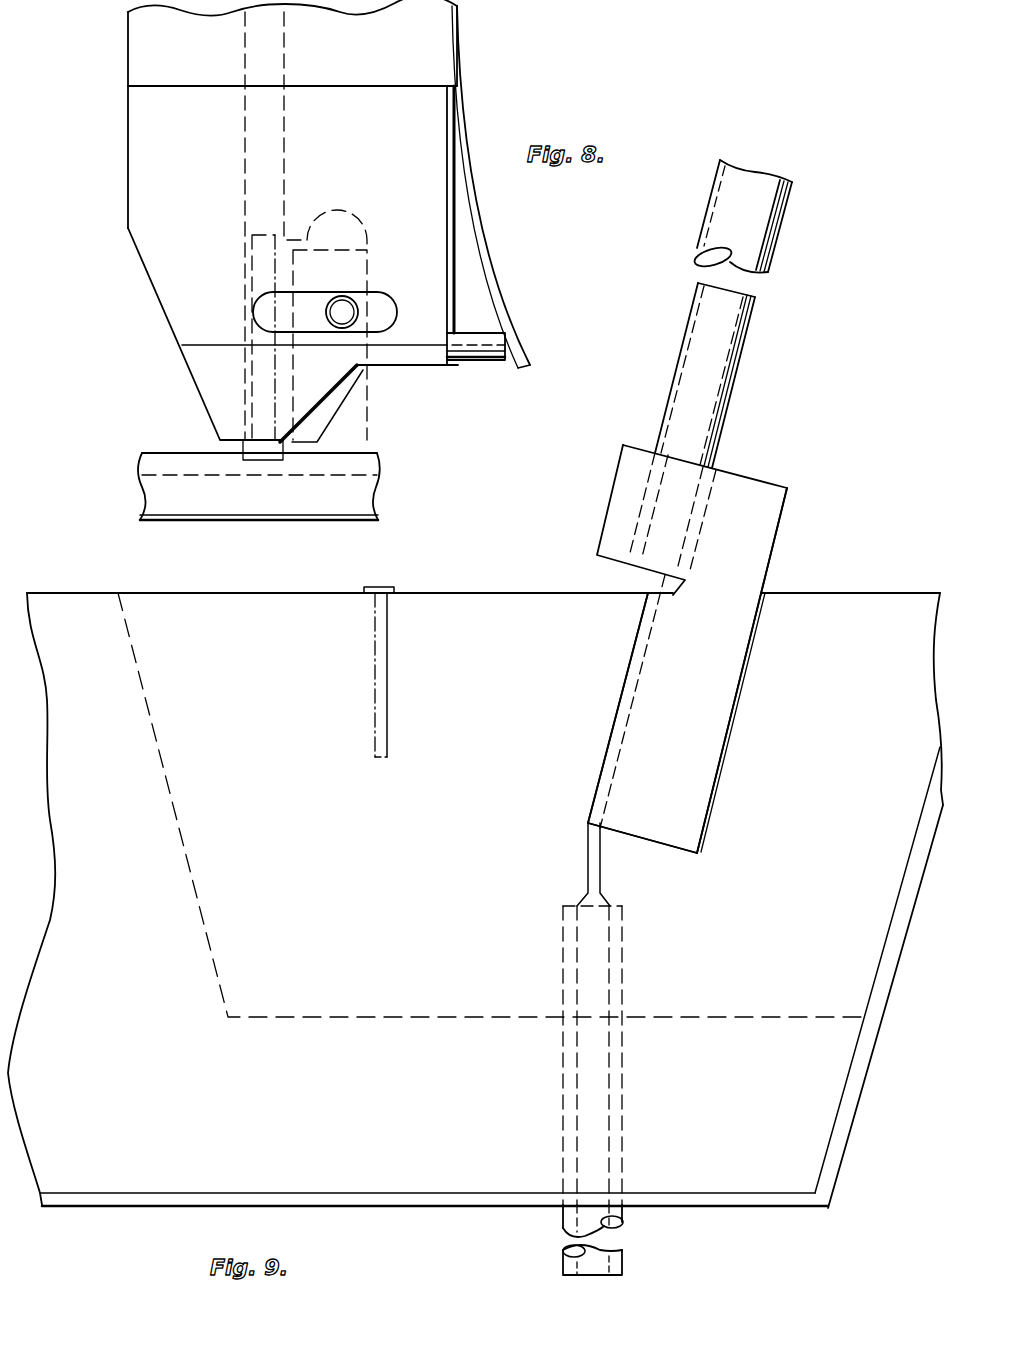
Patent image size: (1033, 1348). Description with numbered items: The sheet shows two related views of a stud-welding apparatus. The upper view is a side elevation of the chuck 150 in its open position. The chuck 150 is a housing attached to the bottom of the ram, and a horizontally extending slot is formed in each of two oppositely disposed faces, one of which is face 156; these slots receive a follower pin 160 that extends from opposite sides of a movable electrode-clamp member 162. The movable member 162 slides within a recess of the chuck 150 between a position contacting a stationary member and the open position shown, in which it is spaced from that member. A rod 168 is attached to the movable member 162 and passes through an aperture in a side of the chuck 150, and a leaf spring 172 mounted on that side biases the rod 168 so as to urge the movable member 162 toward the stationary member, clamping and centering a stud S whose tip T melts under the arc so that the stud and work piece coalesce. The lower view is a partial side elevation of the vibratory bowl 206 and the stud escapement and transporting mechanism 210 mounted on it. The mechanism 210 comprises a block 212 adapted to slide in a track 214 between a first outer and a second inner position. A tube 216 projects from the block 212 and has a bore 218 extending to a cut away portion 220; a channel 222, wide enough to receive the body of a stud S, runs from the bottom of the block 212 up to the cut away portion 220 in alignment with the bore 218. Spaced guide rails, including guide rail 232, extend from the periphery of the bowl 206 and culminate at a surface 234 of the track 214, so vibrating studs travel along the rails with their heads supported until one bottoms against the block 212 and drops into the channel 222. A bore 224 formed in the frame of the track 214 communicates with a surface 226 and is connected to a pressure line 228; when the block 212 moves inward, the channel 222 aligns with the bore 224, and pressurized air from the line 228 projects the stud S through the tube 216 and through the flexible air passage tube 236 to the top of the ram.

In FIG. 8, the chuck 150 is at (126, 201).
In FIG. 8, the face 156 is at (205, 363).
In FIG. 8, the follower pin 160 is at (350, 296).
In FIG. 8, the movable electrode-clamp member 162 is at (327, 408).
In FIG. 8, the rod 168 is at (497, 352).
In FIG. 8, the leaf spring 172 is at (516, 294).
In FIG. 8, the tip T is at (260, 458).
In FIG. 9, the tip T is at (379, 589).
In FIG. 8, the flexible air passage tube 236 is at (795, 222).
In FIG. 8, the bore 218 is at (744, 296).
In FIG. 8, the tube 216 is at (712, 403).
In FIG. 8, the stud escapement and transporting mechanism 210 is at (779, 527).
In FIG. 8, the cut away portion 220 is at (603, 560).
In FIG. 9, the vibratory bowl 206 is at (852, 1082).
In FIG. 9, the guide rail 232 is at (182, 838).
In FIG. 9, the stud S is at (378, 700).
In FIG. 9, the track 214 is at (722, 733).
In FIG. 9, the block 212 is at (706, 690).
In FIG. 9, the channel 222 is at (618, 748).
In FIG. 9, the surface 234 is at (625, 690).
In FIG. 9, the surface 226 is at (660, 834).
In FIG. 9, the bore 224 is at (588, 855).
In FIG. 9, the pressure line 228 is at (624, 1220).